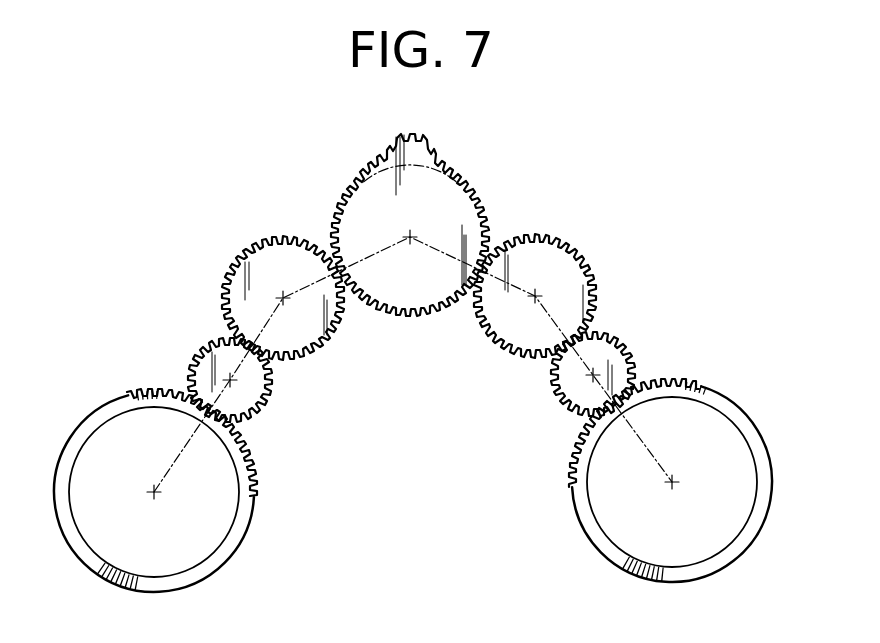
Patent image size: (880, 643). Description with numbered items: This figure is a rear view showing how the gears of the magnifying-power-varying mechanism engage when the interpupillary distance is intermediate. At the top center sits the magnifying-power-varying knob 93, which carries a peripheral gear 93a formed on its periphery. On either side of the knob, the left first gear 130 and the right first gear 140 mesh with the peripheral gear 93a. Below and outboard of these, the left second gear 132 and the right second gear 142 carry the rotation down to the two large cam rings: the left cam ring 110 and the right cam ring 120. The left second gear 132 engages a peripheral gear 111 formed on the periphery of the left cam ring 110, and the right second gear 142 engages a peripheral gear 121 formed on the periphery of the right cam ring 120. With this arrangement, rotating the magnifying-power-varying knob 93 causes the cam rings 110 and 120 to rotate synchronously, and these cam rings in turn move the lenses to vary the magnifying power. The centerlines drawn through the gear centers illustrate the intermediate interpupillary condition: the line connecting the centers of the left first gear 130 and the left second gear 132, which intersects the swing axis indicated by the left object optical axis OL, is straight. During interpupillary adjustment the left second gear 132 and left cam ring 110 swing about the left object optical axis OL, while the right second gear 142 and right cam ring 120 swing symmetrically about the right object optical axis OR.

The magnifying-power-varying knob 93 is at (443, 197).
The peripheral gear 93a is at (343, 198).
The left first gear 130 is at (257, 247).
The right first gear 140 is at (592, 220).
The left second gear 132 is at (197, 362).
The right second gear 142 is at (622, 348).
The left cam ring 110 is at (120, 405).
The right cam ring 120 is at (718, 402).
The peripheral gear 111 is at (238, 445).
The peripheral gear 121 is at (578, 437).
The left object optical axis OL is at (252, 338).
The right object optical axis OR is at (573, 337).